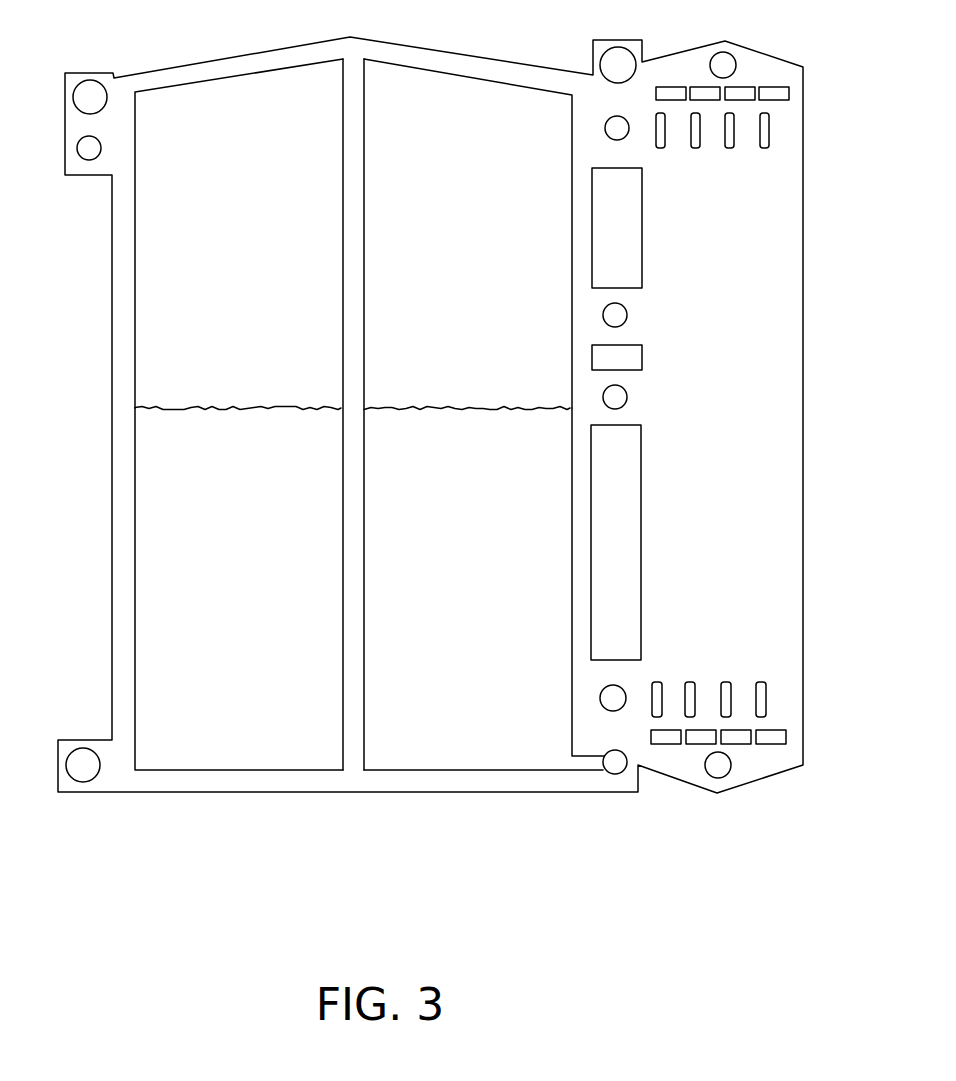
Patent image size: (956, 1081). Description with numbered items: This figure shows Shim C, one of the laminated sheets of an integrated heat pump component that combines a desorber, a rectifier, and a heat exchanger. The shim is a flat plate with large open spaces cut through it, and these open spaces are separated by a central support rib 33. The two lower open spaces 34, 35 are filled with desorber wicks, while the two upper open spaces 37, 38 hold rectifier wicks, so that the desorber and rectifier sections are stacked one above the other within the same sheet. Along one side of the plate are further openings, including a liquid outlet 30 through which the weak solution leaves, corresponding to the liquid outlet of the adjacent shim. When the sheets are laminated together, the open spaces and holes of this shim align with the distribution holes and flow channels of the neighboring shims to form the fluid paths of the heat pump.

The liquid outlet 30 is at (613, 768).
The support rib 33 is at (353, 298).
The lower open space 34 is at (173, 612).
The lower open space 35 is at (468, 732).
The upper open space 37 is at (150, 353).
The upper open space 38 is at (480, 120).